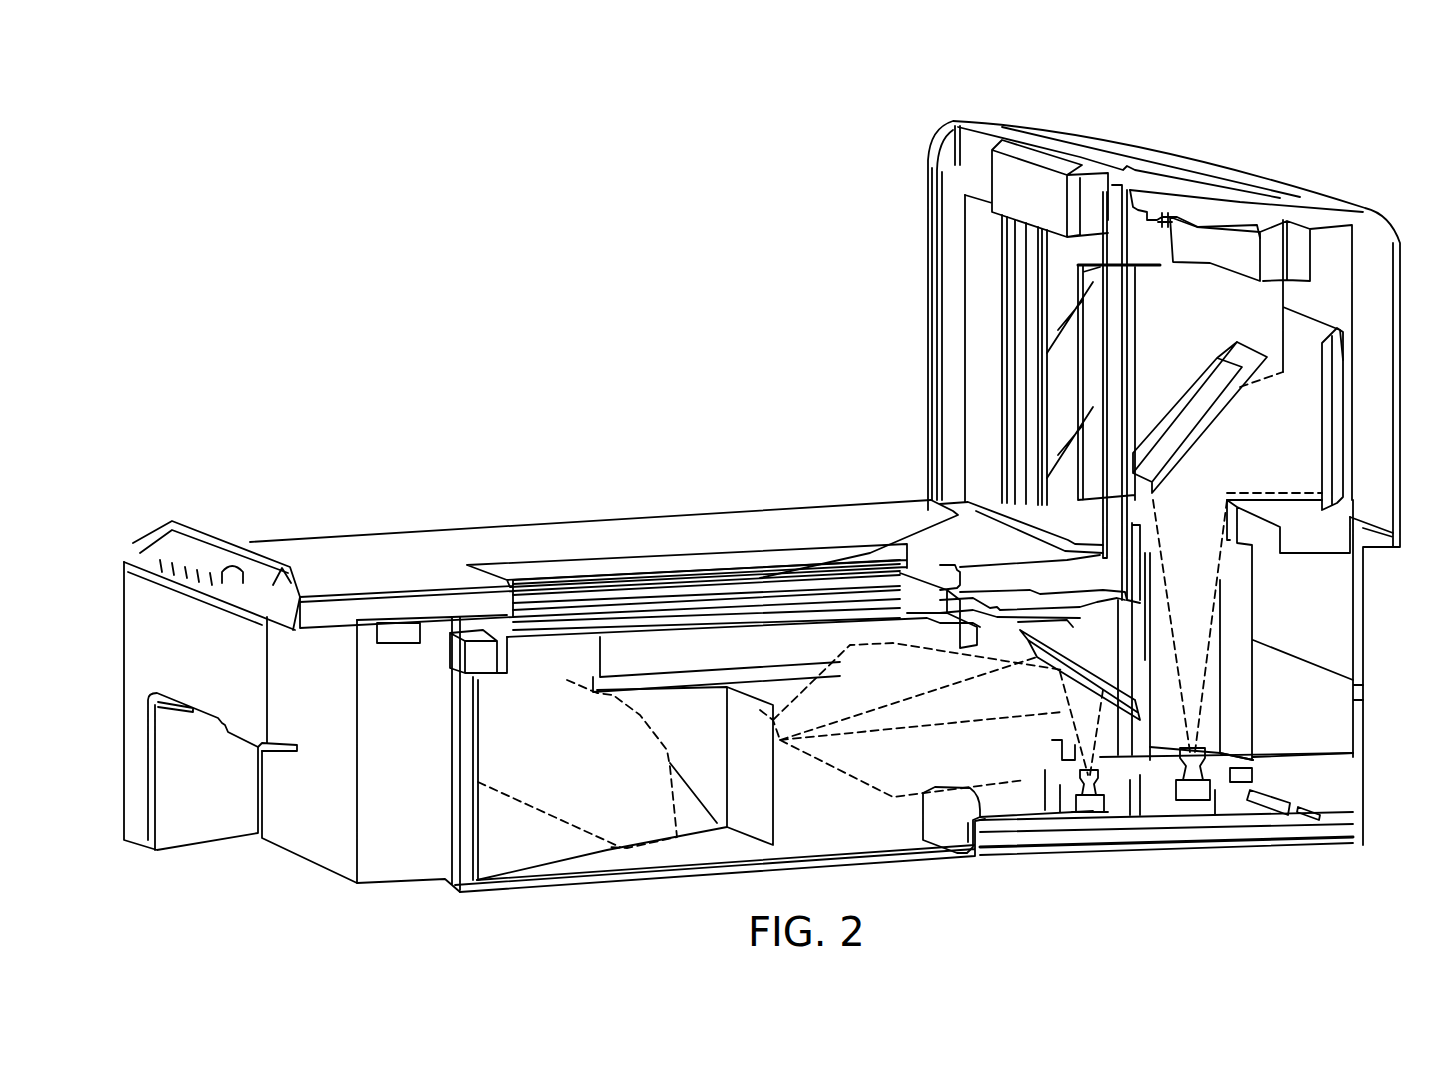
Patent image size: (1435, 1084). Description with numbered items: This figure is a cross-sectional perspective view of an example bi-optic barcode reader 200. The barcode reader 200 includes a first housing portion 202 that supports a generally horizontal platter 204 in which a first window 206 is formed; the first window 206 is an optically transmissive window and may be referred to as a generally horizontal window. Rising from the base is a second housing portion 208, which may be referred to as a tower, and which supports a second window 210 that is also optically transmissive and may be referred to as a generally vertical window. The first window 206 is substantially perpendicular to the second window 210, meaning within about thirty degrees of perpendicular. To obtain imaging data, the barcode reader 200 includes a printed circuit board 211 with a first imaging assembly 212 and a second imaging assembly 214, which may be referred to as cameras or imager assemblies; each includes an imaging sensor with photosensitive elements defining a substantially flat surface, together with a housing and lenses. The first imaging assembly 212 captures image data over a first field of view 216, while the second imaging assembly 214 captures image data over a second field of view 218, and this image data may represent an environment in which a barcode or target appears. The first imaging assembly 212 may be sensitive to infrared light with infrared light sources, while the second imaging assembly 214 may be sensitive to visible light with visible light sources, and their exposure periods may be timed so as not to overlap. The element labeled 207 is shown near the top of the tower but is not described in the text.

The bi-optic barcode reader 200 is at (928, 86).
The first housing portion 202 is at (417, 543).
The generally horizontal platter 204 is at (487, 548).
The first window 206 is at (625, 566).
The illumination assembly 207 is at (1162, 208).
The second housing portion 208 is at (948, 166).
The second window 210 is at (1032, 325).
The printed circuit board 211 is at (1318, 836).
The first imaging assembly 212 is at (1193, 813).
The second imaging assembly 214 is at (1090, 818).
The first field of view 216 is at (1197, 601).
The second field of view 218 is at (1080, 732).